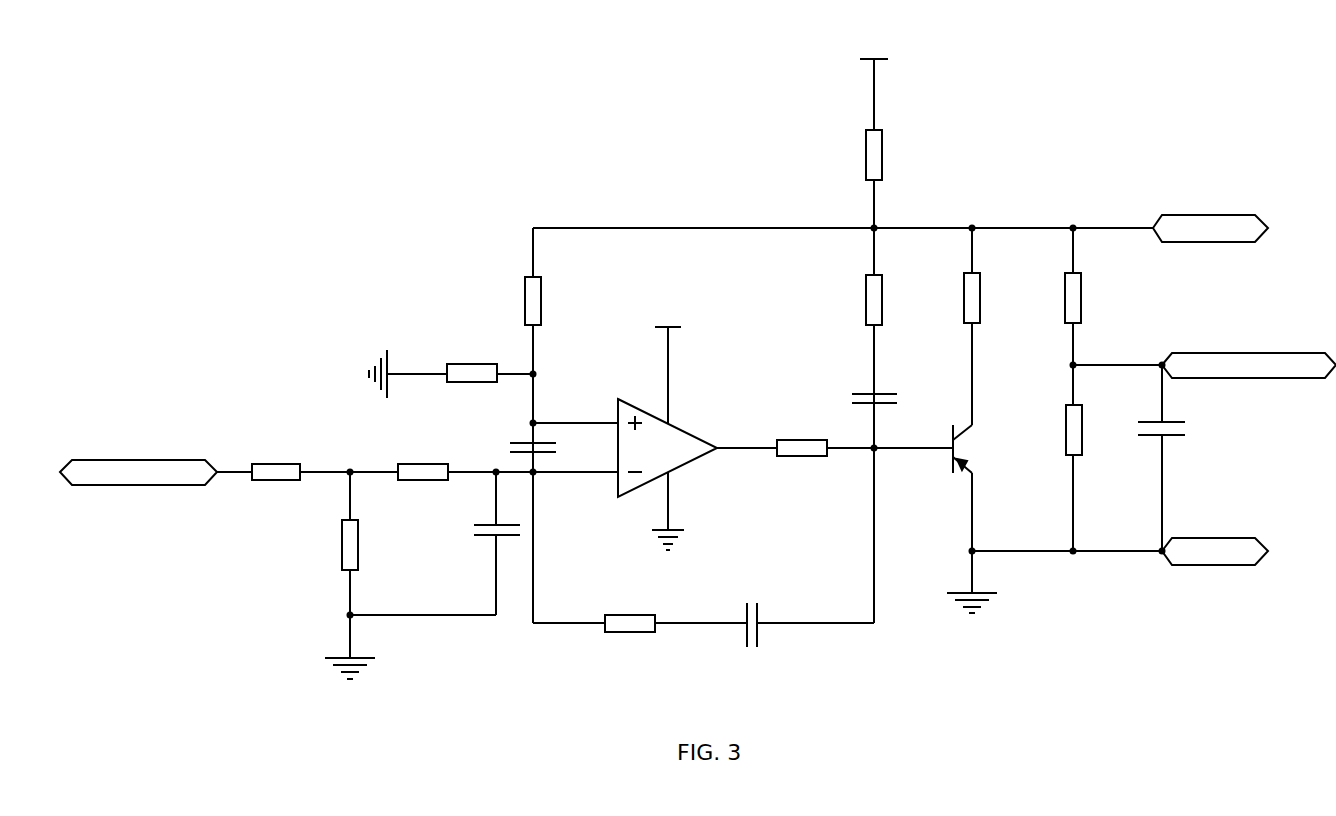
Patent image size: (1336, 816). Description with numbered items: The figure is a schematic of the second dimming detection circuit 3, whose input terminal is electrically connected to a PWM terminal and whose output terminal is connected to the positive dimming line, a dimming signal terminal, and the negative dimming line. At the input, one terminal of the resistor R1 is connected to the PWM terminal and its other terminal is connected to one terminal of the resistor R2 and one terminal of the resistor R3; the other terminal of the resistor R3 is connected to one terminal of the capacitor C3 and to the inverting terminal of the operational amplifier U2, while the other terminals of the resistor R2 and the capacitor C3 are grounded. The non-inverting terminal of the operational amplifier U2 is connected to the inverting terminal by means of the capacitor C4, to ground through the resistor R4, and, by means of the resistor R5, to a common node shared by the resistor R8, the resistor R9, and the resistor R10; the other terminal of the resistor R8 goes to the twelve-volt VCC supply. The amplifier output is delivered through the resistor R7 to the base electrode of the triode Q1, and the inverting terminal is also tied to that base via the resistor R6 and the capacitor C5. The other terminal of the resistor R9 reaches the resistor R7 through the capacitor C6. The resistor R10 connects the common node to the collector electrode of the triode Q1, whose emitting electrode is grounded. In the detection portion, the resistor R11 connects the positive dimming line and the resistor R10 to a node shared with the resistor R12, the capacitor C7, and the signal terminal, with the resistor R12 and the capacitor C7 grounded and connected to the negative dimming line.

The second dimming detection circuit 3 is at (698, 369).
The resistor R1 is at (276, 460).
The resistor R2 is at (361, 545).
The resistor R3 is at (423, 460).
The resistor R4 is at (472, 361).
The resistor R5 is at (547, 301).
The resistor R6 is at (630, 610).
The resistor R7 is at (802, 437).
The resistor R8 is at (886, 155).
The resistor R9 is at (886, 300).
The resistor R10 is at (989, 298).
The resistor R11 is at (1090, 298).
The resistor R12 is at (1090, 430).
The capacitor C3 is at (480, 534).
The capacitor C4 is at (543, 446).
The capacitor C5 is at (749, 613).
The capacitor C6 is at (886, 399).
The capacitor C7 is at (1173, 433).
The operational amplifier U2 is at (680, 441).
The triode Q1 is at (978, 449).